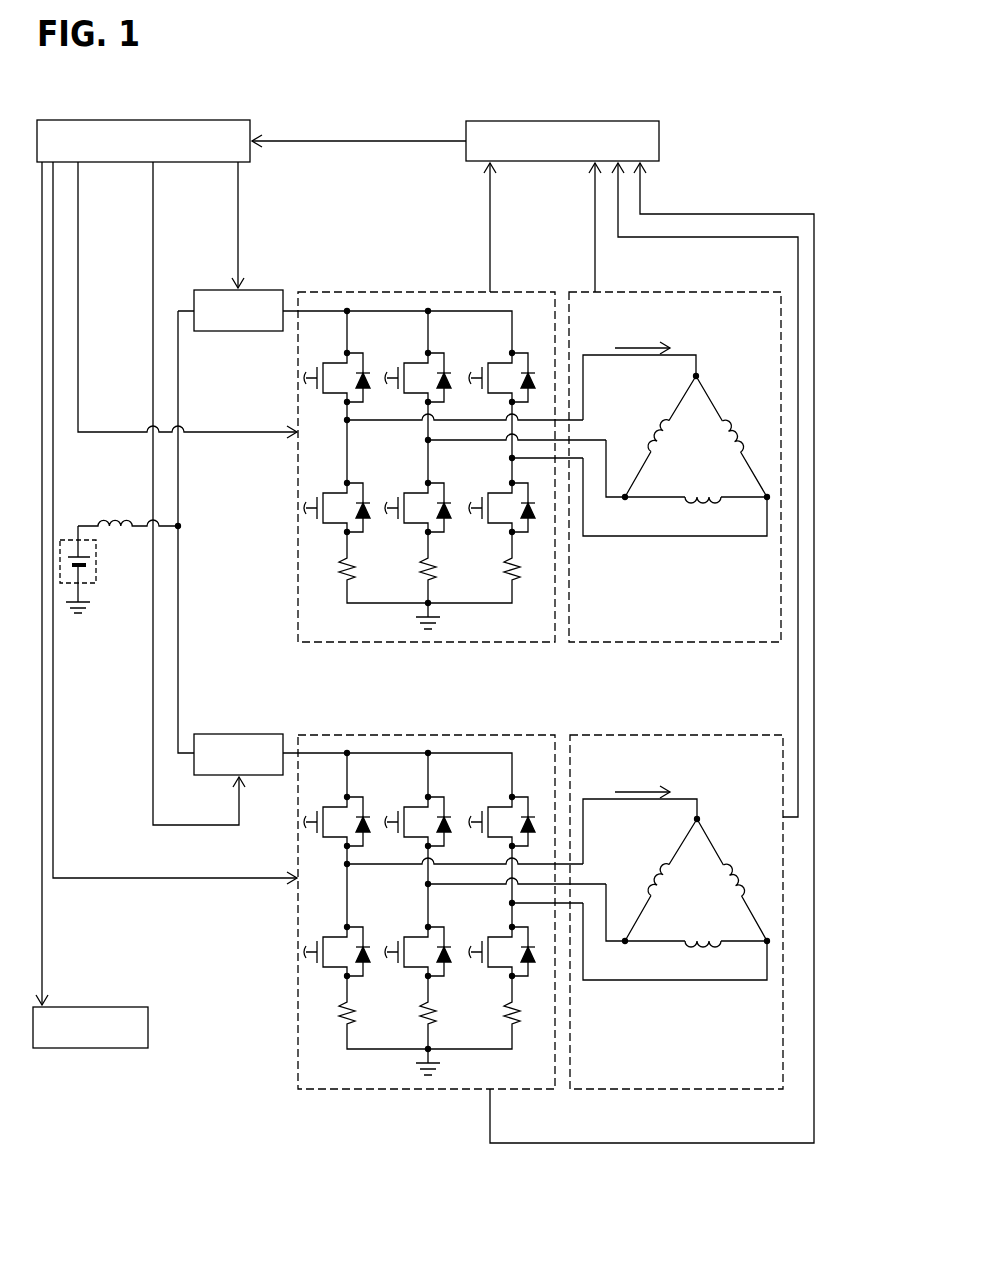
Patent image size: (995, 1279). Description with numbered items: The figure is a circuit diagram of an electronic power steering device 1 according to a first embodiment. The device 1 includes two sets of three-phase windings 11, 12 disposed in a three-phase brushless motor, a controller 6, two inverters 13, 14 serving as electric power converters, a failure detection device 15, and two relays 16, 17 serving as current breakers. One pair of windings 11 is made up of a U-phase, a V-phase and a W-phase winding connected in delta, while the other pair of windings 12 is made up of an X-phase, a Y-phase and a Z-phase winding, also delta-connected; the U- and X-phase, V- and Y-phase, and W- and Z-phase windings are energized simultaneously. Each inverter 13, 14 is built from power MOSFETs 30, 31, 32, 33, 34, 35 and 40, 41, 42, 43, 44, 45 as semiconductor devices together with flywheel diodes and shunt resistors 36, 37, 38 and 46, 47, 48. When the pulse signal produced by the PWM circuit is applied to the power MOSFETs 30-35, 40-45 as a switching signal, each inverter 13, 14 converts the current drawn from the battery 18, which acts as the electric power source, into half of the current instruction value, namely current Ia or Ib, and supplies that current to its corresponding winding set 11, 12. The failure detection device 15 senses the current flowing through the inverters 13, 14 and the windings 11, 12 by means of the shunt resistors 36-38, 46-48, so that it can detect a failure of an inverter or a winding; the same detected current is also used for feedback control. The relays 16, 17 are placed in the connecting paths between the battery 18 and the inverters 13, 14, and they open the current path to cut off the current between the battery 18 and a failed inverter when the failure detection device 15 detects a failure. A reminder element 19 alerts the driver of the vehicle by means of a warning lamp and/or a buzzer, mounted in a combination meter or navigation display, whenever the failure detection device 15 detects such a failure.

The electronic power steering device 1 is at (681, 76).
The controller 6 is at (204, 119).
The three-phase windings 11 is at (712, 644).
The three-phase windings 12 is at (708, 1091).
The inverter 13 is at (452, 483).
The inverter 14 is at (452, 929).
The failure detection device 15 is at (609, 120).
The relay 16 is at (259, 289).
The relay 17 is at (259, 733).
The battery 18 is at (90, 585).
The reminder element 19 is at (99, 1005).
The power MOSFET 30 is at (362, 358).
The power MOSFET 31 is at (443, 358).
The power MOSFET 32 is at (527, 358).
The power MOSFET 33 is at (362, 489).
The power MOSFET 34 is at (443, 489).
The power MOSFET 35 is at (527, 489).
The shunt resistor 36 is at (360, 557).
The shunt resistor 37 is at (441, 557).
The shunt resistor 38 is at (525, 557).
The power MOSFET 40 is at (362, 802).
The power MOSFET 41 is at (443, 802).
The power MOSFET 42 is at (527, 802).
The power MOSFET 43 is at (362, 933).
The power MOSFET 44 is at (443, 933).
The power MOSFET 45 is at (527, 933).
The shunt resistor 46 is at (360, 1001).
The shunt resistor 47 is at (441, 1001).
The shunt resistor 48 is at (525, 1001).